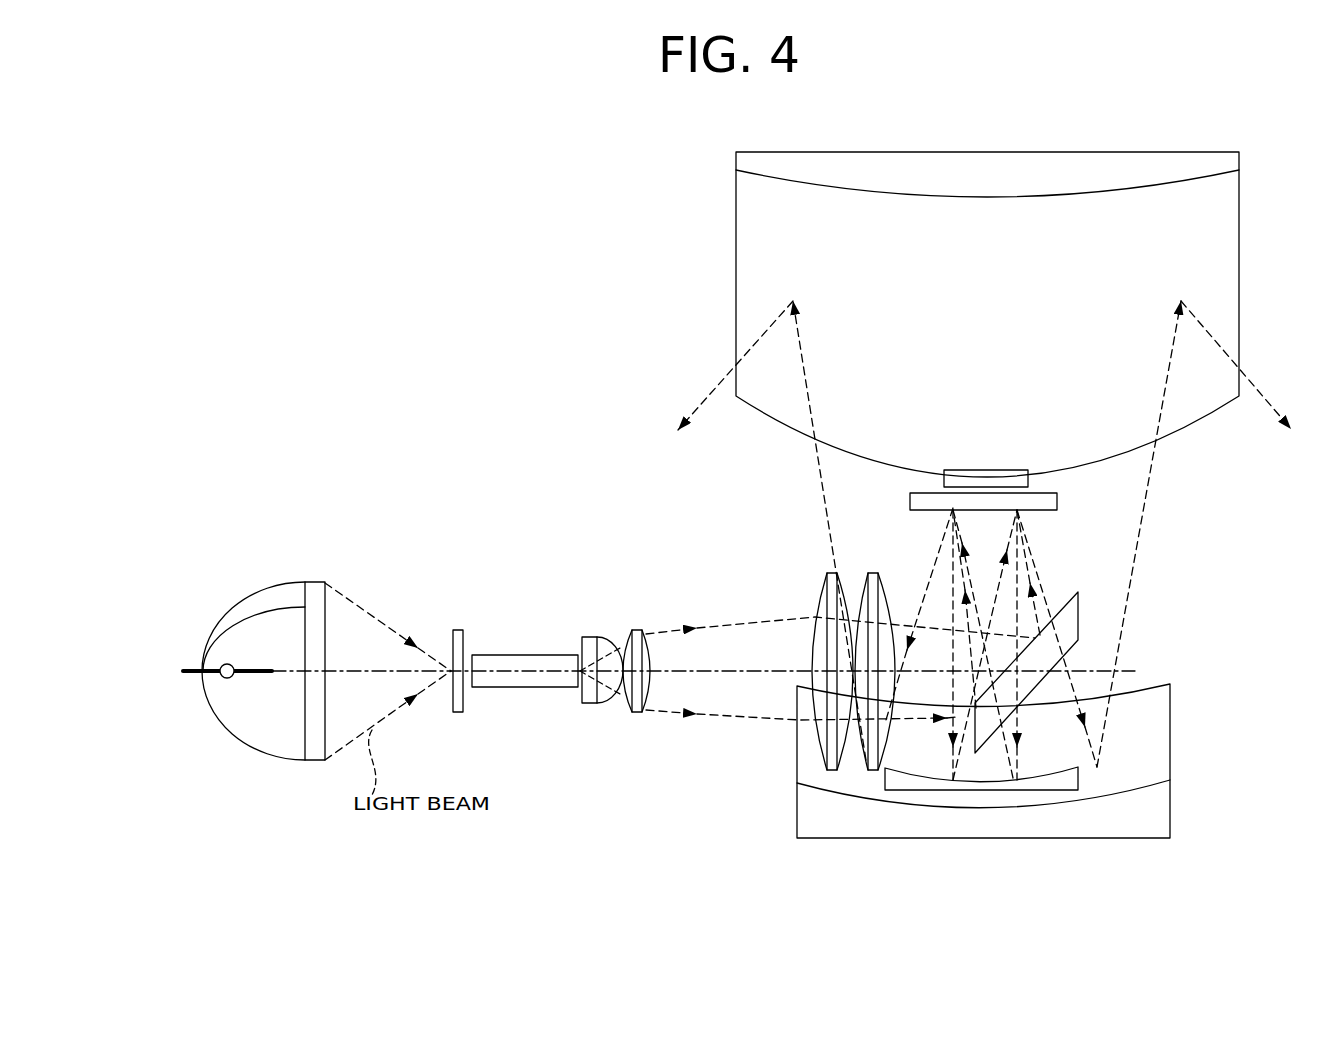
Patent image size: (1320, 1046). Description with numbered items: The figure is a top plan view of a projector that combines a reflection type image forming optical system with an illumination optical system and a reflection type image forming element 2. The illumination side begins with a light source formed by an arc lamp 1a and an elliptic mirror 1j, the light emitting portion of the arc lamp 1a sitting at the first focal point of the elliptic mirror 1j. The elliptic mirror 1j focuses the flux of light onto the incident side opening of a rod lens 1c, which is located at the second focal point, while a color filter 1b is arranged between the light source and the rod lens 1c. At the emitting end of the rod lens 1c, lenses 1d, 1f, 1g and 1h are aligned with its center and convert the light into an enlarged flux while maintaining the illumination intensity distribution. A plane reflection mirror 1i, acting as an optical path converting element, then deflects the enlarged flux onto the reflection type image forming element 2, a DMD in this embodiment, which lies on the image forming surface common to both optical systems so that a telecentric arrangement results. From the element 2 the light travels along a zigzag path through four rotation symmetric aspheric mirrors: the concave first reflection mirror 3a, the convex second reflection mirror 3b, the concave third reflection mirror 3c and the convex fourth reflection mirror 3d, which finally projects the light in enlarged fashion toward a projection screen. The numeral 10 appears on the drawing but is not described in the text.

The arc lamp 1a is at (247, 667).
The color filter 1b is at (458, 630).
The rod lens 1c is at (530, 645).
The lens 1d is at (592, 704).
The lens 1f is at (637, 713).
The lens 1g is at (833, 573).
The lens 1h is at (875, 573).
The plane reflection mirror 1i is at (1063, 633).
The elliptic mirror 1j is at (320, 582).
The reflection type image forming element 2 is at (987, 498).
The first reflection mirror 3a is at (1070, 777).
The second reflection mirror 3b is at (1057, 500).
The third reflection mirror 3c is at (1148, 738).
The fourth reflection mirror 3d is at (757, 220).
The optical axis of light beam 10 is at (722, 672).